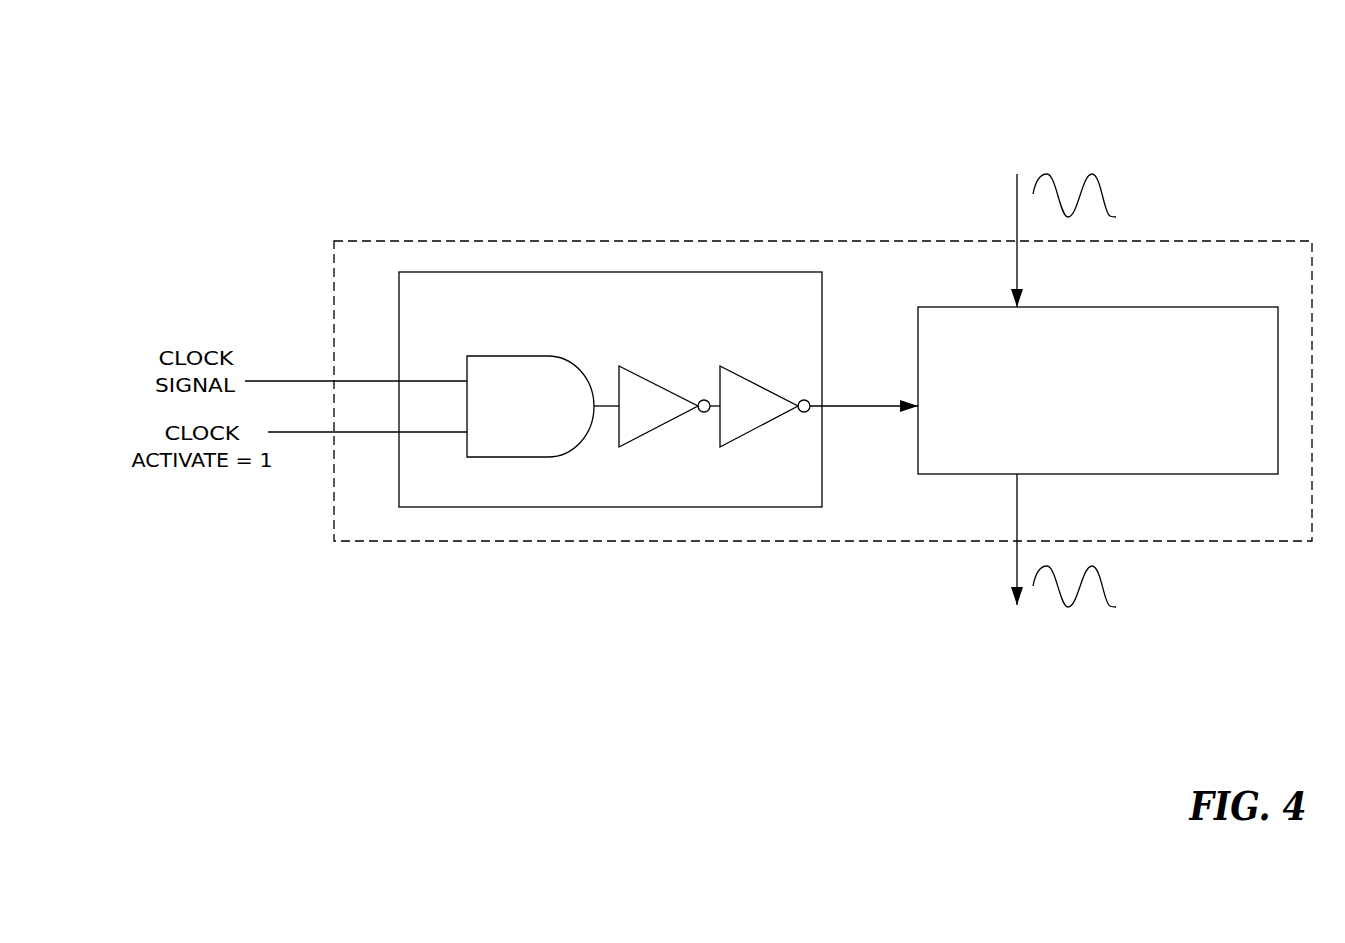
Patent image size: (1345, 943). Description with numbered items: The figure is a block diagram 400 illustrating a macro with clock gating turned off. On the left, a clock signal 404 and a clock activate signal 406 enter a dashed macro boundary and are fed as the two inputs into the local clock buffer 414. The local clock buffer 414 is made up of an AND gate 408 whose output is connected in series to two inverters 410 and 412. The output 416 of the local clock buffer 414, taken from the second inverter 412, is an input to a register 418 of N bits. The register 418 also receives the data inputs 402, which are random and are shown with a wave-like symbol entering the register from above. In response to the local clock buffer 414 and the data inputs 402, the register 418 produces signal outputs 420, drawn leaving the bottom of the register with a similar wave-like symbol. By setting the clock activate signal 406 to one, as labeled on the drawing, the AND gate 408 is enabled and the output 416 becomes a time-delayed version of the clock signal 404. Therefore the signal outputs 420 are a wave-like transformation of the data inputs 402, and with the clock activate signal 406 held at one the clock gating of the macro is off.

The block diagram illustrating a macro with clock gating off 400 is at (1198, 90).
The data inputs 402 is at (1016, 196).
The clock signal 404 is at (319, 378).
The clock activate signal 406 is at (307, 430).
The AND gate 408 is at (512, 417).
The inverter 410 is at (630, 417).
The inverter 412 is at (735, 417).
The local clock buffer 414 is at (592, 337).
The output 416 is at (877, 403).
The register 418 is at (1080, 414).
The signal outputs 420 is at (1016, 580).